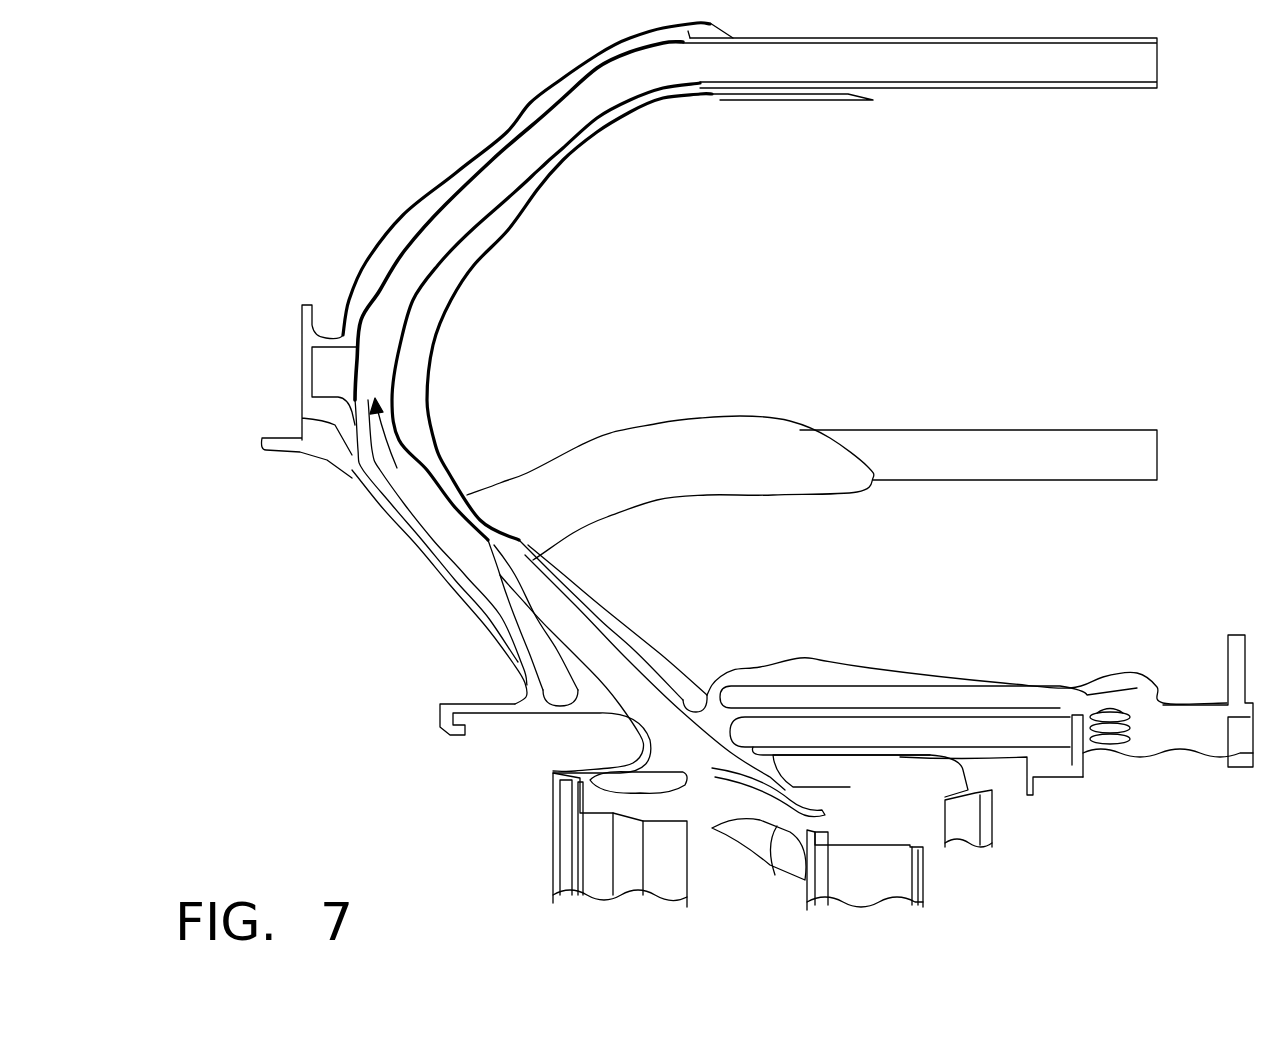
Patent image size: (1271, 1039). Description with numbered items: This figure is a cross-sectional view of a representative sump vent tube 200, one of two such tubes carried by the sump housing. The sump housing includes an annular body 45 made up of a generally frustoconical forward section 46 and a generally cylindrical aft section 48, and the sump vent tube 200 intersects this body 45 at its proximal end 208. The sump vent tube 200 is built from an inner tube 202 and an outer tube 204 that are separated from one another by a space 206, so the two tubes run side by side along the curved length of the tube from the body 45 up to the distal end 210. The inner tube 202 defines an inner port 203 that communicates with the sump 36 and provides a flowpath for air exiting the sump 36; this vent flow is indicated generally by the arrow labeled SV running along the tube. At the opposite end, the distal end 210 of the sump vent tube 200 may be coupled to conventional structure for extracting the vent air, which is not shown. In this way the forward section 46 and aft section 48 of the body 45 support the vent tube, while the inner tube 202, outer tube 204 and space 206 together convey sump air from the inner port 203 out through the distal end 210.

The sump vent tube 200 is at (408, 127).
The distal end 210 is at (1013, 85).
The outer tube 204 is at (587, 152).
The inner tube 202 is at (401, 354).
The space 206 is at (503, 217).
The forward section 46 is at (412, 598).
The annular body 45 is at (476, 702).
The inner port 203 is at (663, 788).
The sump 36 is at (990, 897).
The proximal end 208 is at (692, 667).
The aft section 48 is at (995, 662).